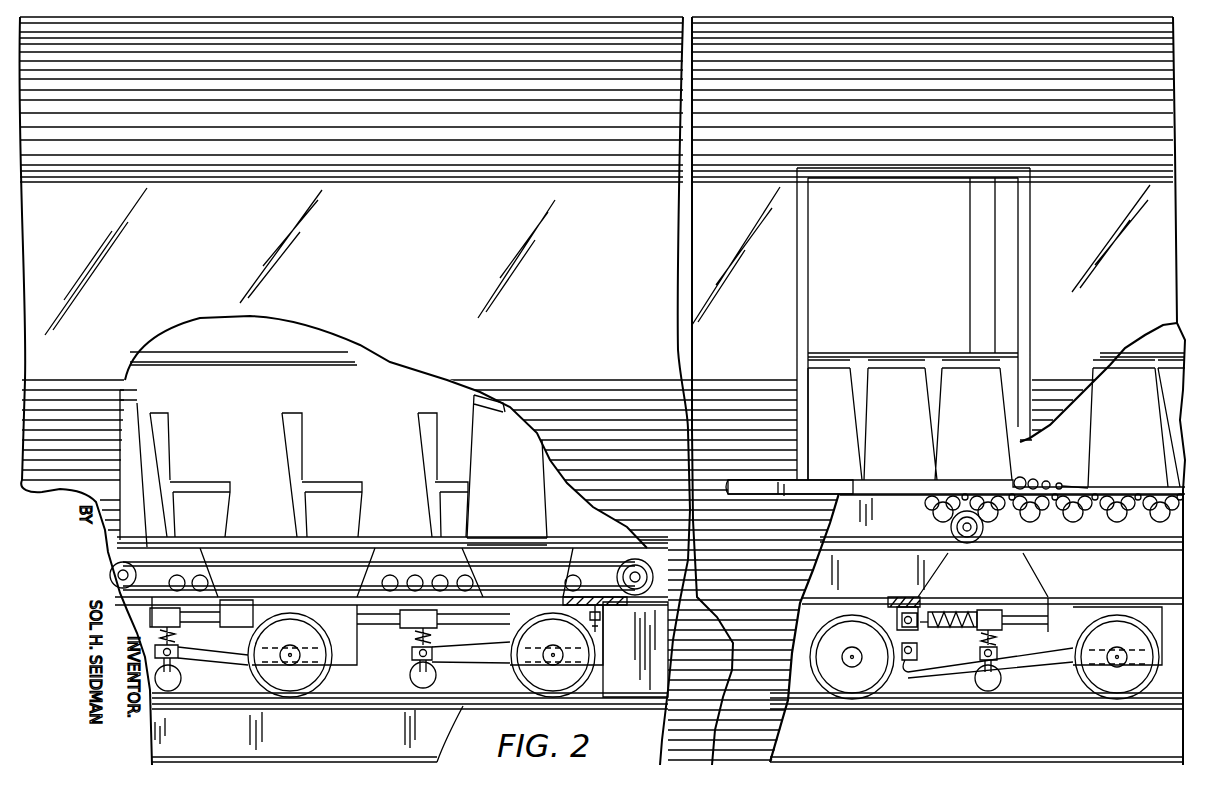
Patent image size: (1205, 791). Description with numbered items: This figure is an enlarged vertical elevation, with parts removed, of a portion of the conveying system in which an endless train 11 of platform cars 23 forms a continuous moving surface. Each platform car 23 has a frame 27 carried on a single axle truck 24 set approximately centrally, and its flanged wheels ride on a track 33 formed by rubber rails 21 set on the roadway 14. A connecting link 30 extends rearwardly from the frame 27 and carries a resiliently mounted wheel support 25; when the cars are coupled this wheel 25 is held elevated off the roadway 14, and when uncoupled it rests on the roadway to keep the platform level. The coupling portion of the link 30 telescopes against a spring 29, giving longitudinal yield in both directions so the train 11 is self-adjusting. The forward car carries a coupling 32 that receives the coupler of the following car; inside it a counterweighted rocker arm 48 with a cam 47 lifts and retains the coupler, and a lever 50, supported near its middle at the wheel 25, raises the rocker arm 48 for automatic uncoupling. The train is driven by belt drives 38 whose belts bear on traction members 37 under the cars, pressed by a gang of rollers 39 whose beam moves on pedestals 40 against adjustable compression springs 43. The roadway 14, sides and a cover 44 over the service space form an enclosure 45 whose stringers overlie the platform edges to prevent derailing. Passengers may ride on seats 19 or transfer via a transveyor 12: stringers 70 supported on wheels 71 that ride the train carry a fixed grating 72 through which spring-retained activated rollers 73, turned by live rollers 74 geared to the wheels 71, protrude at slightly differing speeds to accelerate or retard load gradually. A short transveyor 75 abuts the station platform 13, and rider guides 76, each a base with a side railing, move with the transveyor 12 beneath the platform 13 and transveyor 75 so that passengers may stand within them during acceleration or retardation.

The endless train 11 is at (217, 686).
The transveyor 12 is at (1062, 536).
The entrance/exit platform 13 is at (908, 468).
The roadway 14 is at (462, 708).
The seat 19 is at (357, 482).
The rubber rail 21 is at (368, 695).
The platform car 23 is at (277, 518).
The single axle truck 24 is at (840, 694).
The wheel support 25 is at (436, 676).
The frame 27 is at (367, 548).
The spring 29 is at (960, 612).
The connecting link 30 is at (453, 620).
The coupling 32 is at (353, 636).
The track 33 is at (903, 710).
The traction member 37 is at (672, 602).
The belt drive 38 is at (610, 547).
The gang of rollers 39 is at (422, 548).
The pedestal 40 is at (641, 695).
The compression spring 43 is at (600, 625).
The cover 44 is at (238, 356).
The enclosure 45 is at (40, 480).
The cam 47 is at (920, 642).
The rocker arm 48 is at (918, 655).
The lever 50 is at (948, 672).
The stringer 70 is at (906, 523).
The wheel 71 is at (985, 530).
The grating 72 is at (1140, 500).
The activated roller 73 is at (1090, 510).
The live roller 74 is at (1033, 522).
The short transveyor 75 is at (1051, 472).
The rider guide 76 is at (532, 495).